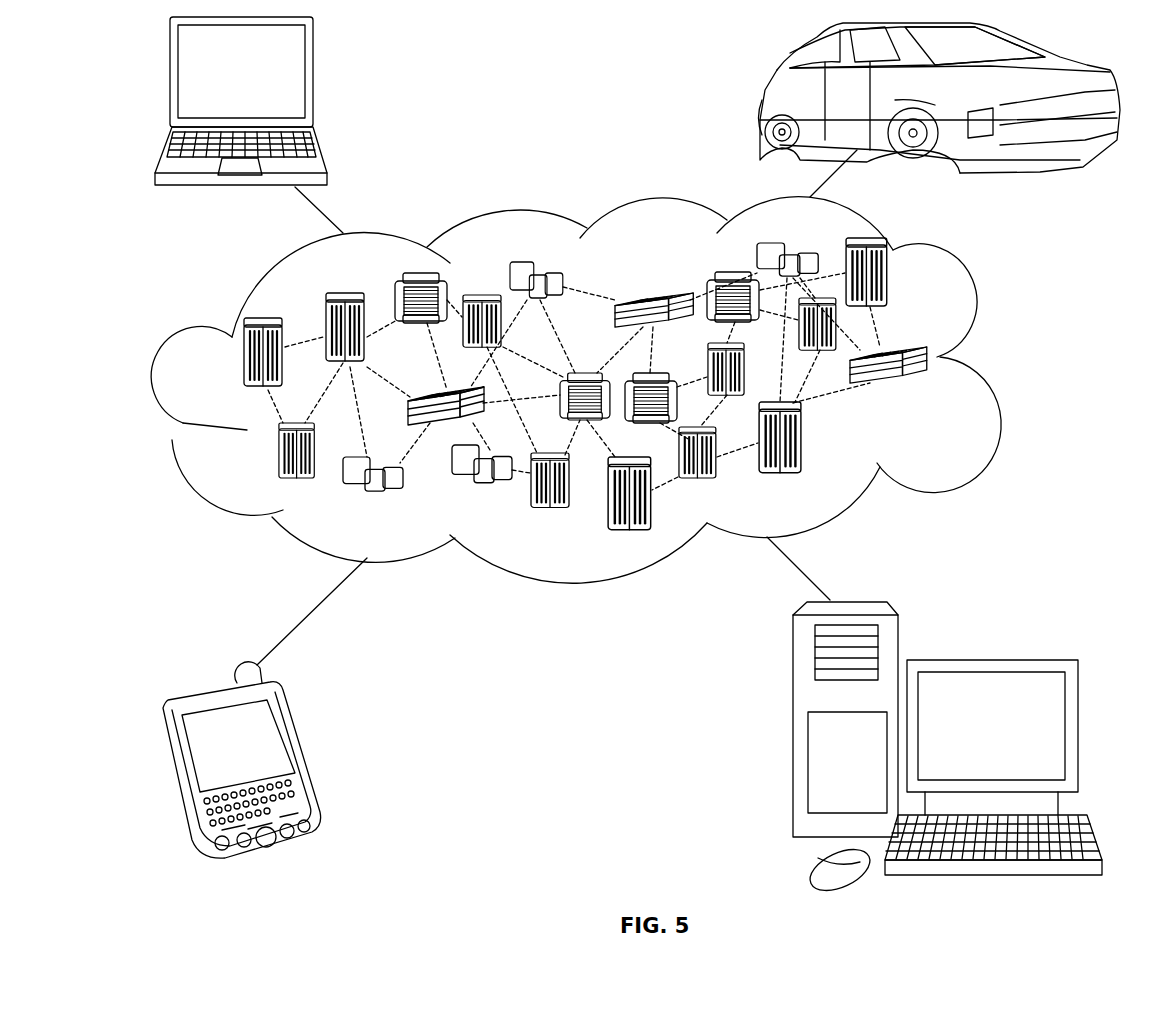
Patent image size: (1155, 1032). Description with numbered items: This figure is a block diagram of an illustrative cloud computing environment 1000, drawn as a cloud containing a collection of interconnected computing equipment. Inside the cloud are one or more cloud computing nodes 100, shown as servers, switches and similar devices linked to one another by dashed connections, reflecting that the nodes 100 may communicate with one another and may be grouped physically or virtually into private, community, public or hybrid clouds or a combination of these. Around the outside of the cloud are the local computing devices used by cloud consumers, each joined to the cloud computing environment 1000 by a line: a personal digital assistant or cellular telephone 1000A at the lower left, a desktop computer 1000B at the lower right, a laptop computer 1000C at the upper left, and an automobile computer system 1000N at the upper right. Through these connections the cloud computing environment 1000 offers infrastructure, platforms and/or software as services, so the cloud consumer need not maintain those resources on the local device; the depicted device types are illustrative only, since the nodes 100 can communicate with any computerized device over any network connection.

The cloud computing nodes 100 is at (645, 384).
The cloud computing environment 1000 is at (990, 364).
The personal digital assistant (PDA) or cellular telephone 1000A is at (300, 758).
The desktop computer 1000B is at (987, 660).
The laptop computer 1000C is at (310, 82).
The automobile computer system 1000N is at (762, 98).